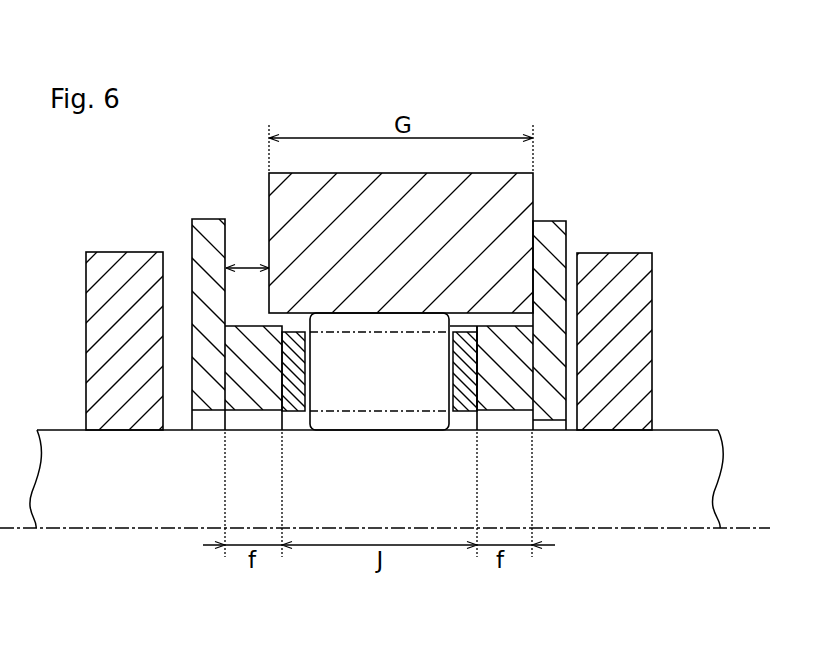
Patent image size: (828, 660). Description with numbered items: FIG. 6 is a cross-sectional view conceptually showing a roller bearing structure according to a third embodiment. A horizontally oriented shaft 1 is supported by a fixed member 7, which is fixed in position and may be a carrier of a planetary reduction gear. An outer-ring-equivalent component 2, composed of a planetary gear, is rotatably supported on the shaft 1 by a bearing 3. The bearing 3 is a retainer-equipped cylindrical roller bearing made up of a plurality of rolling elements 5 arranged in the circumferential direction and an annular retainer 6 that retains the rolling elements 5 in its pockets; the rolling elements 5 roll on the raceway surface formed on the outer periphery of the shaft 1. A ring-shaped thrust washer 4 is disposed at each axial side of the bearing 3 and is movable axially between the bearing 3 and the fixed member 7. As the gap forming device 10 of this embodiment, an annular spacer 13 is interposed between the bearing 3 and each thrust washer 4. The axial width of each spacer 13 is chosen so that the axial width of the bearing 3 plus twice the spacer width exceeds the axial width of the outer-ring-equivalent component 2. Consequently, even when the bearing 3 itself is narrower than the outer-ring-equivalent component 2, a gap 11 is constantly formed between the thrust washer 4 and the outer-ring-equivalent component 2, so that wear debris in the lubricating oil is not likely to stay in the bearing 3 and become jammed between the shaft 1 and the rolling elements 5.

The shaft 1 is at (58, 432).
The outer-ring-equivalent component 2 is at (268, 176).
The bearing 3 is at (404, 277).
The thrust washer 4 is at (198, 237).
The rolling element 5 is at (458, 330).
The retainer 6 is at (477, 327).
The fixed member 7 is at (88, 288).
The gap forming device 10 is at (225, 170).
The gap 11 is at (253, 252).
The spacer 13 is at (240, 370).